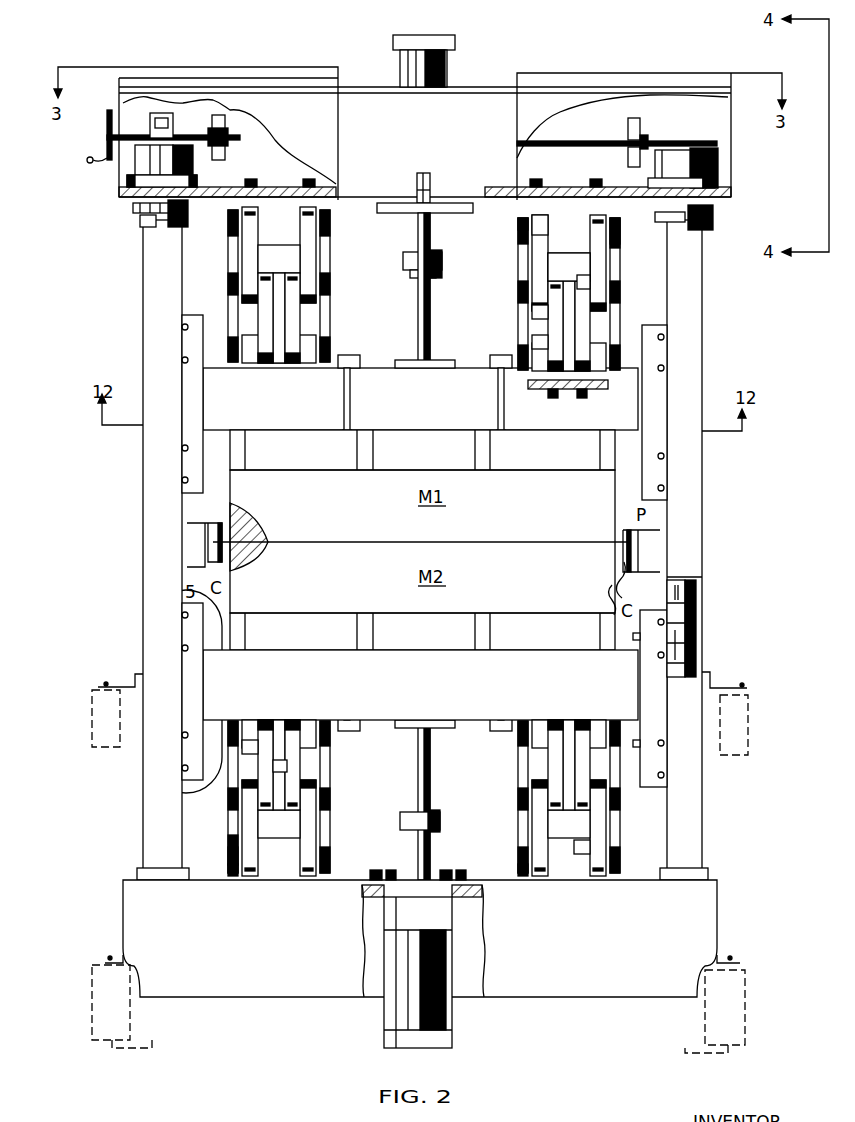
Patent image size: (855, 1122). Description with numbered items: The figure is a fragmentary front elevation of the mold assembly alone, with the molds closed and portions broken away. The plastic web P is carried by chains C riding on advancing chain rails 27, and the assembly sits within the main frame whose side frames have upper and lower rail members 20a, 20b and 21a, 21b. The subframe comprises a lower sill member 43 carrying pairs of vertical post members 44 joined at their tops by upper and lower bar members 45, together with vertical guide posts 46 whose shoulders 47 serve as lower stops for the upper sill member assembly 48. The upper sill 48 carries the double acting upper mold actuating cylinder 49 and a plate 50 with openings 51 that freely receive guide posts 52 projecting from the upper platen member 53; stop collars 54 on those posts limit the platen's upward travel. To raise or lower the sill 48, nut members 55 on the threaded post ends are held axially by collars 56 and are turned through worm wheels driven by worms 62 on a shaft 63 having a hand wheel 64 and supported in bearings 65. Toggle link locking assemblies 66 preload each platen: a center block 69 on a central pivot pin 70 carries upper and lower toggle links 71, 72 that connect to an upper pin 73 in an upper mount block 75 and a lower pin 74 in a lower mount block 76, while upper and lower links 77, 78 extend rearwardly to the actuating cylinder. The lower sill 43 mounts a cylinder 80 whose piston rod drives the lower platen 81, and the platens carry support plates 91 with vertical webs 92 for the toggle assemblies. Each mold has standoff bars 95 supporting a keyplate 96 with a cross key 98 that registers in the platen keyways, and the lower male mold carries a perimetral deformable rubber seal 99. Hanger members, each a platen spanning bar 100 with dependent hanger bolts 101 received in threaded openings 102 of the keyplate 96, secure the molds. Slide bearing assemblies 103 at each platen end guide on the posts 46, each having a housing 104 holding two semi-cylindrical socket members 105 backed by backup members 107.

The upper rail member 20a is at (748, 706).
The lower rail member 20b is at (745, 1000).
The upper rail member 21a is at (90, 712).
The lower rail member 21b is at (90, 978).
The advancing chain rails 27 is at (640, 543).
The lower sill member 43 is at (306, 952).
The vertical post members 44 is at (141, 810).
The upper and lower bar members 45 is at (138, 222).
The guide posts 46 is at (705, 578).
The shoulders 47 is at (132, 207).
The upper sill member assembly 48 is at (428, 124).
The upper mold actuating cylinder 49 is at (457, 46).
The plate 50 is at (380, 203).
The openings 51 is at (432, 192).
The guide posts 52 is at (432, 172).
The upper platen member 53 is at (421, 389).
The stop collars 54 is at (412, 252).
The nut members 55 is at (722, 160).
The collars 56 is at (728, 190).
The worms 62 is at (676, 145).
The shaft 63 is at (555, 142).
The hand wheel 64 is at (88, 160).
The bearings 65 is at (226, 138).
The toggle link locking assemblies 66 is at (340, 292).
The center block 69 is at (575, 284).
The central pivot pin 70 is at (622, 300).
The upper toggle links 71 is at (533, 237).
The lower toggle links 72 is at (620, 332).
The upper pin 73 is at (620, 232).
The lower pin 74 is at (652, 340).
The upper mount block 75 is at (516, 216).
The lower mount block 76 is at (522, 340).
The upper links 77 is at (516, 260).
The lower links 78 is at (522, 312).
The cylinder 80 is at (384, 1033).
The lower platen 81 is at (406, 695).
The support plates 91 is at (548, 400).
The webs 92 is at (583, 400).
The standoff bars 95 is at (248, 448).
The keyplate 96 is at (290, 418).
The cross key 98 is at (420, 410).
The deformable rubber seal 99 is at (269, 535).
The platen spanning bar 100 is at (364, 356).
The hanger bolts 101 is at (343, 382).
The threaded openings 102 is at (350, 428).
The slide bearing assemblies 103 is at (195, 390).
The housing 104 is at (698, 656).
The semi-cylindrical socket members 105 is at (694, 602).
The backup members 107 is at (698, 616).